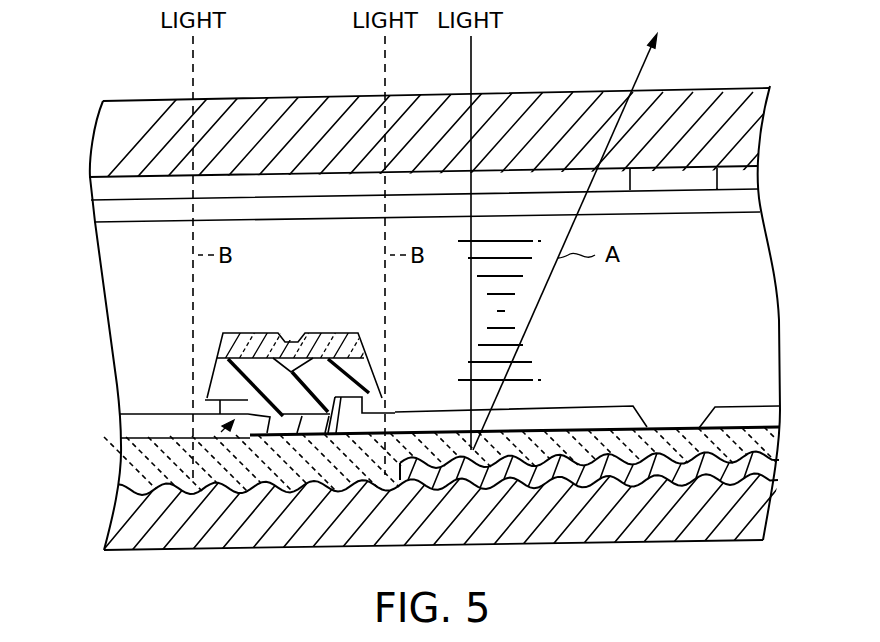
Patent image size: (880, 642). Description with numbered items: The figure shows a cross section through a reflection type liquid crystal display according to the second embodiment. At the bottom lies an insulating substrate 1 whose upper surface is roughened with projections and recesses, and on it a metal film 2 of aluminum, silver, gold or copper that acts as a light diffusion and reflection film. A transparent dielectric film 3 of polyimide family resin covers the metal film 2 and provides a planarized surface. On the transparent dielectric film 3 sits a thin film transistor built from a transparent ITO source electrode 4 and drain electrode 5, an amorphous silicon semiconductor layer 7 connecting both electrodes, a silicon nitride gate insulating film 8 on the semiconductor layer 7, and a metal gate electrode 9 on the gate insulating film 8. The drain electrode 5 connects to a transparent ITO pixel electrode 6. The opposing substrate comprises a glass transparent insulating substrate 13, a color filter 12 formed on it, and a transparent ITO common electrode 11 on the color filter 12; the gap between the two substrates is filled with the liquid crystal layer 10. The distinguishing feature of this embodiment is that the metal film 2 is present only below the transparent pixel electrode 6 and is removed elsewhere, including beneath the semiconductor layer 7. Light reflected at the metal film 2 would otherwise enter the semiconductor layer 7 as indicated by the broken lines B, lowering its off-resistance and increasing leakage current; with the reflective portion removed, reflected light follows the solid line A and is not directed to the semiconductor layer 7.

The insulating substrate 1 is at (747, 505).
The metal film 2 is at (617, 470).
The transparent dielectric film 3 is at (747, 457).
The source electrode 4 is at (197, 418).
The drain electrode 5 is at (355, 425).
The transparent pixel electrode 6 is at (557, 420).
The semiconductor layer 7 is at (350, 390).
The gate insulating film 8 is at (227, 373).
The gate electrode 9 is at (330, 333).
The liquid crystal layer 10 is at (113, 277).
The common electrode 11 is at (750, 204).
The color filter 12 is at (98, 193).
The transparent insulating substrate 13 is at (722, 134).